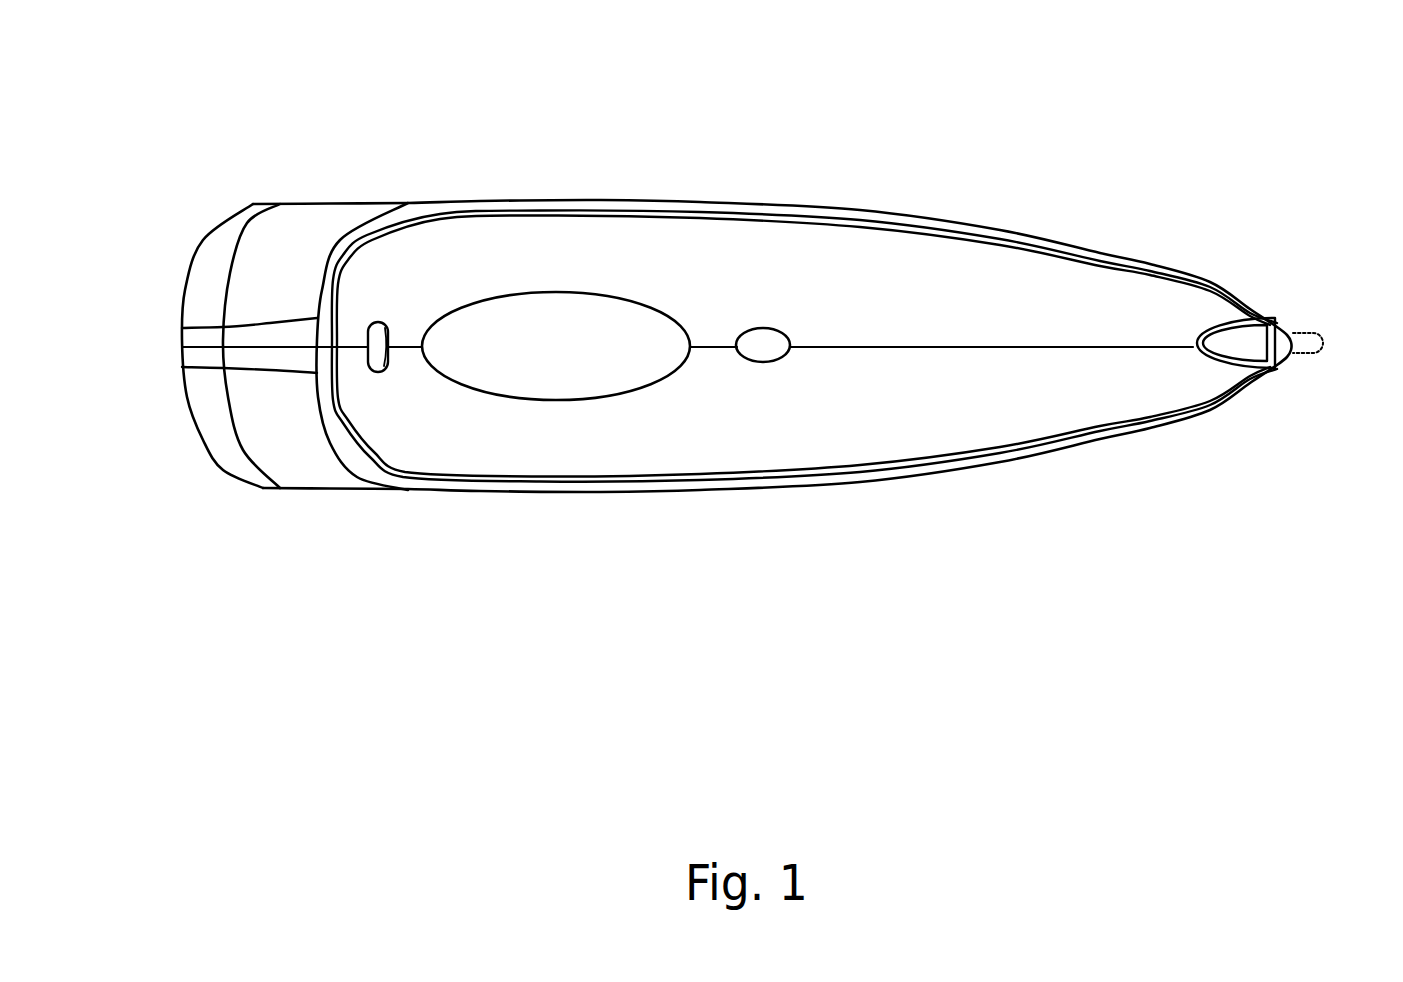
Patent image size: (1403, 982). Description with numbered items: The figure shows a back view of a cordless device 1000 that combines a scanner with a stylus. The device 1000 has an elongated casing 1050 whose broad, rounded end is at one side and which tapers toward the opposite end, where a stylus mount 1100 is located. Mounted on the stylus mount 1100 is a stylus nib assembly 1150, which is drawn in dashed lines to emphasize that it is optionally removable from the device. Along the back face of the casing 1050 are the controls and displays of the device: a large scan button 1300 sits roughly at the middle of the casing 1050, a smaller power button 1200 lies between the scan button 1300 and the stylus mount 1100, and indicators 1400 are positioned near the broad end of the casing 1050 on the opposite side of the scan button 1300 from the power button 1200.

The cordless device 1000 is at (1133, 512).
The casing 1050 is at (302, 237).
The stylus mount 1100 is at (1293, 333).
The stylus nib assembly 1150 is at (1305, 342).
The power button 1200 is at (767, 352).
The scan button 1300 is at (550, 328).
The indicators 1400 is at (382, 360).